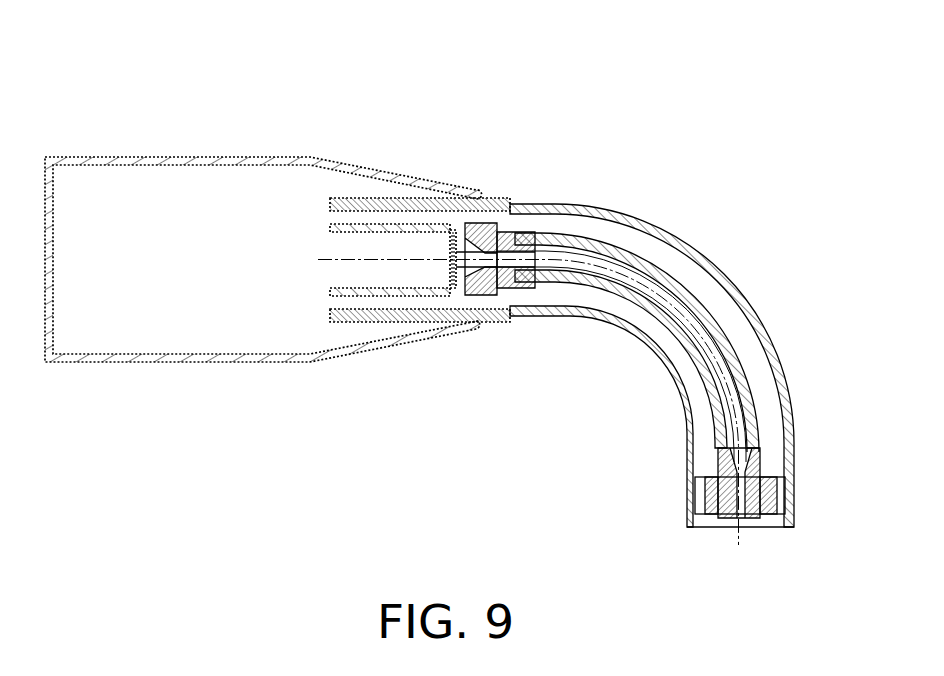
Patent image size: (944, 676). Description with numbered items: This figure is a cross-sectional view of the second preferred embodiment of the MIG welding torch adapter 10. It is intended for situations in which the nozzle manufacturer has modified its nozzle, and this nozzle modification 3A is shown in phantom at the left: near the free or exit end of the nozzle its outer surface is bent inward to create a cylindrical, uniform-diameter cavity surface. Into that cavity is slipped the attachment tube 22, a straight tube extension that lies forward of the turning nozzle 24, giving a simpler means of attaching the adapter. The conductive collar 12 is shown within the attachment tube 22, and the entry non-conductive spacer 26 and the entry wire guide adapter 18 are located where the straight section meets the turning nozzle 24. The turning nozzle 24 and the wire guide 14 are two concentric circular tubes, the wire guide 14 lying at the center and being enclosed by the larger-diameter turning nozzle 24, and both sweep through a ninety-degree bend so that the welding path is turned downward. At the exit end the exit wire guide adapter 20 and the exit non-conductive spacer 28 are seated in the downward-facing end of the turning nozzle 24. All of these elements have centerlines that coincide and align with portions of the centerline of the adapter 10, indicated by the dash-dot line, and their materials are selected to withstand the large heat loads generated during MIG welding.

The MIG welding torch adapter 10 is at (641, 104).
The nozzle modification 3A is at (246, 157).
The attachment tube 22 is at (393, 204).
The conductive collar 12 is at (432, 246).
The turning nozzle 24 is at (641, 218).
The wire guide 14 is at (722, 318).
The entry non-conductive spacer 26 is at (497, 300).
The entry wire guide adapter 18 is at (526, 286).
The exit wire guide adapter 20 is at (756, 490).
The exit non-conductive spacer 28 is at (790, 490).